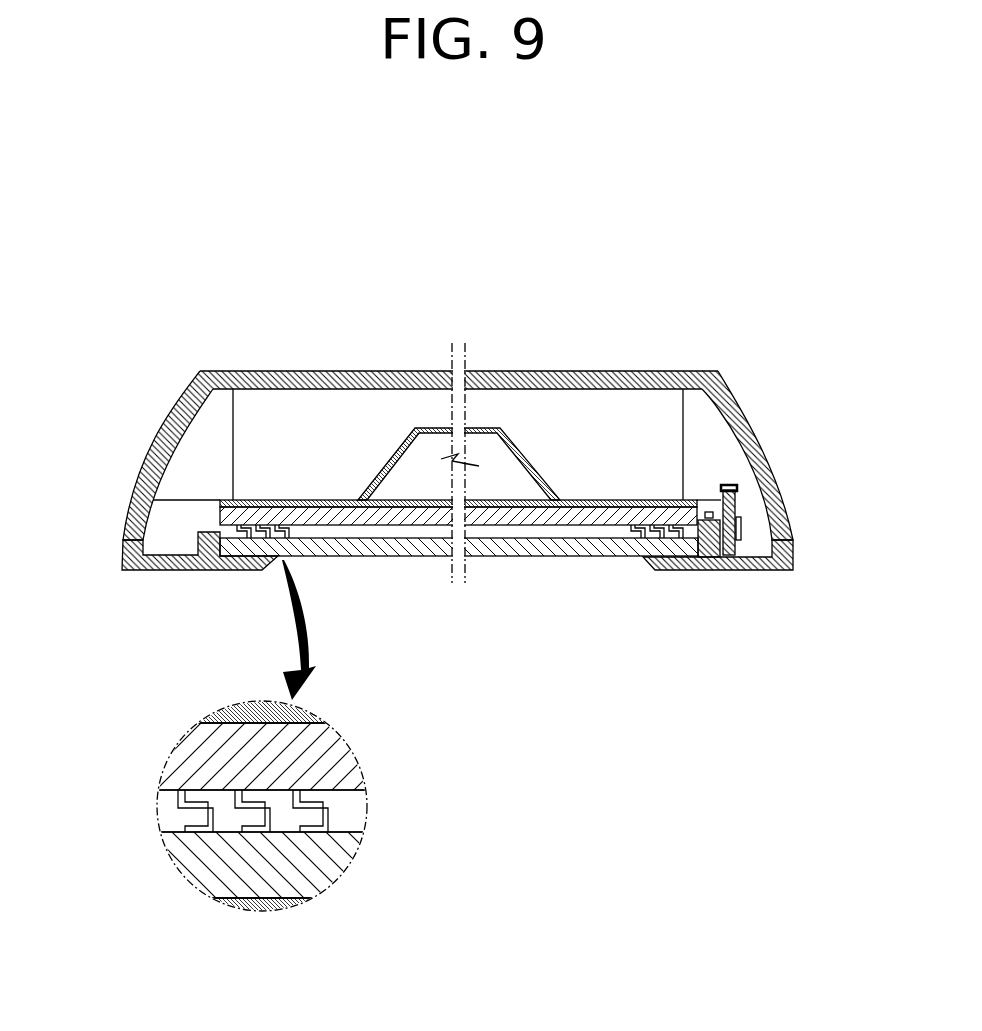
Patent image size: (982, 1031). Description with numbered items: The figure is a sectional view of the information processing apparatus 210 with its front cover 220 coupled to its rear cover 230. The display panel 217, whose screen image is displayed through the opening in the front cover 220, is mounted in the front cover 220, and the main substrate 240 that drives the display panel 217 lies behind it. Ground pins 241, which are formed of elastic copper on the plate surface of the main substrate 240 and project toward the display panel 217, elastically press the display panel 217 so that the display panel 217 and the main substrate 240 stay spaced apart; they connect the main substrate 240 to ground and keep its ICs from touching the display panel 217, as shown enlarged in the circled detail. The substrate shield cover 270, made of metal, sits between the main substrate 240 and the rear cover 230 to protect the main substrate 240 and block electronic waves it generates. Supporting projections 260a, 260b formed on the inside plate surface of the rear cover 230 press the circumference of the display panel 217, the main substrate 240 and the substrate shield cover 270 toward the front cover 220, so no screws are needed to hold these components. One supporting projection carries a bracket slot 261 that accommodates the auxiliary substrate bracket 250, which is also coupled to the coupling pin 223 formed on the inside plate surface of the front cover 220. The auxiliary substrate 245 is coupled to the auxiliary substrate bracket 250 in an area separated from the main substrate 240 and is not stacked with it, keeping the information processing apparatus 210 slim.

The information processing apparatus 210 is at (140, 305).
The display panel 217 is at (597, 556).
The front cover 220 is at (747, 570).
The coupling pin 223 is at (707, 557).
The rear cover 230 is at (585, 371).
The main substrate 240 is at (511, 527).
The ground pin 241 is at (162, 792).
The auxiliary substrate 245 is at (772, 541).
The auxiliary substrate bracket 250 is at (735, 507).
The supporting projection 260a is at (217, 405).
The supporting projection 260b is at (702, 420).
The bracket slot 261 is at (740, 486).
The substrate shield cover 270 is at (470, 428).